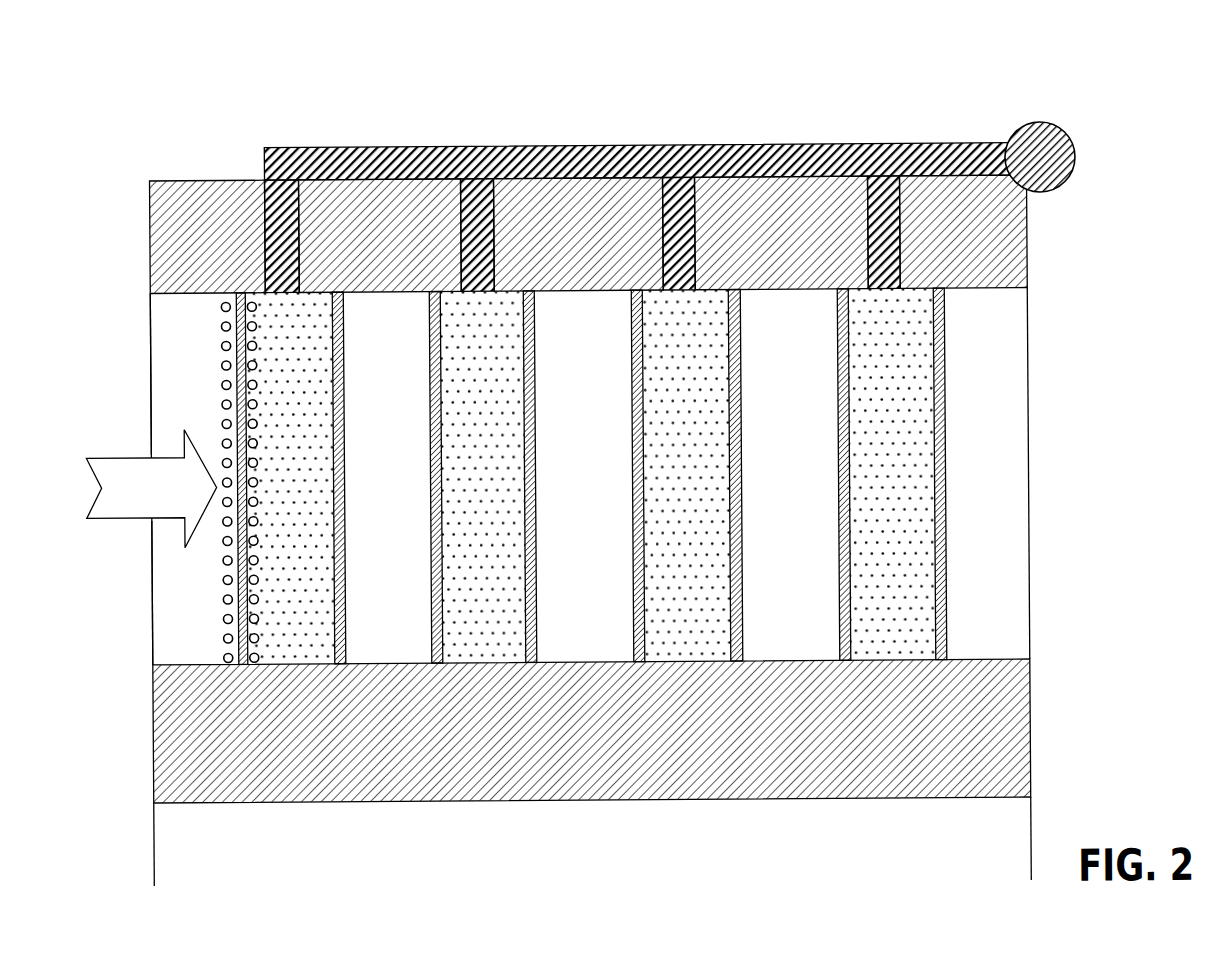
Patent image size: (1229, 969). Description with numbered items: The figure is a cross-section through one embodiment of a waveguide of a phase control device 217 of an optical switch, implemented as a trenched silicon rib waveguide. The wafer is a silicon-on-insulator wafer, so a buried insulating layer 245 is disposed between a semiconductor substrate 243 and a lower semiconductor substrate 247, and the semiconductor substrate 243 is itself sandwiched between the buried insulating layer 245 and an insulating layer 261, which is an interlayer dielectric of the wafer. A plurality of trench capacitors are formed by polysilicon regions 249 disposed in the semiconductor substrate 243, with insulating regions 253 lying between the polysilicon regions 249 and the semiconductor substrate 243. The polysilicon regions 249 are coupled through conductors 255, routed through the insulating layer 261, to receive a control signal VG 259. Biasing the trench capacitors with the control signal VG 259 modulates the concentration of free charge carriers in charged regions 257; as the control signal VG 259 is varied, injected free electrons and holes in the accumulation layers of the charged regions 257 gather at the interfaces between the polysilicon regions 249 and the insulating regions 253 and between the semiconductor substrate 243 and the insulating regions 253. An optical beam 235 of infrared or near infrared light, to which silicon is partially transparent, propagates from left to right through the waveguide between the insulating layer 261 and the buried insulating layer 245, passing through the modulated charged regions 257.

The phase control device 217 is at (867, 58).
The optical beam 235 is at (101, 455).
The semiconductor substrate 243 is at (150, 340).
The buried insulating layer 245 is at (154, 734).
The semiconductor substrate 247 is at (163, 855).
The polysilicon regions 249 is at (312, 644).
The insulating regions 253 is at (236, 646).
The conductors 255 is at (478, 144).
The charged regions 257 is at (224, 345).
The control signal VG 259 is at (1026, 85).
The insulating layer 261 is at (151, 240).